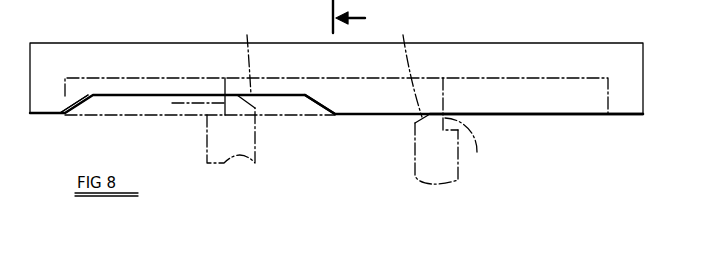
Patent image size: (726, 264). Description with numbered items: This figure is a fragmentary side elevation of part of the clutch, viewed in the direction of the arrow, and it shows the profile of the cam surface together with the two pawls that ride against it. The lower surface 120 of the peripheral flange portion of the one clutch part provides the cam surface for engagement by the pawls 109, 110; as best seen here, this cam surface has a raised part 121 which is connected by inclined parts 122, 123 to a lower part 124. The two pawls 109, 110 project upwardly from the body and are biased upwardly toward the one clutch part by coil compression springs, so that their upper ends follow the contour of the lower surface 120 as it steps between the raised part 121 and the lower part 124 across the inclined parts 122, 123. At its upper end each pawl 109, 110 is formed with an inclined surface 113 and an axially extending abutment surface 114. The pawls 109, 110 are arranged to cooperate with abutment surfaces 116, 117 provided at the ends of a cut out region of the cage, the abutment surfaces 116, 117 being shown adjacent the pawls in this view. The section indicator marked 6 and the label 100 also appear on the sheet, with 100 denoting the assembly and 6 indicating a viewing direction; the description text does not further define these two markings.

The section view indicator (FIG. 6) 6 is at (311, 27).
The blade 100 is at (349, 16).
The pawl 109 is at (448, 180).
The pawl 110 is at (241, 165).
The inclined surface 113 is at (328, 68).
The abutment surface 114 is at (200, 103).
The abutment surface 116 is at (443, 84).
The abutment surface 117 is at (226, 84).
The lower surface 120 is at (572, 115).
The raised part 121 is at (130, 95).
The inclined part 122 is at (70, 105).
The inclined part 123 is at (323, 110).
The lower part 124 is at (483, 115).